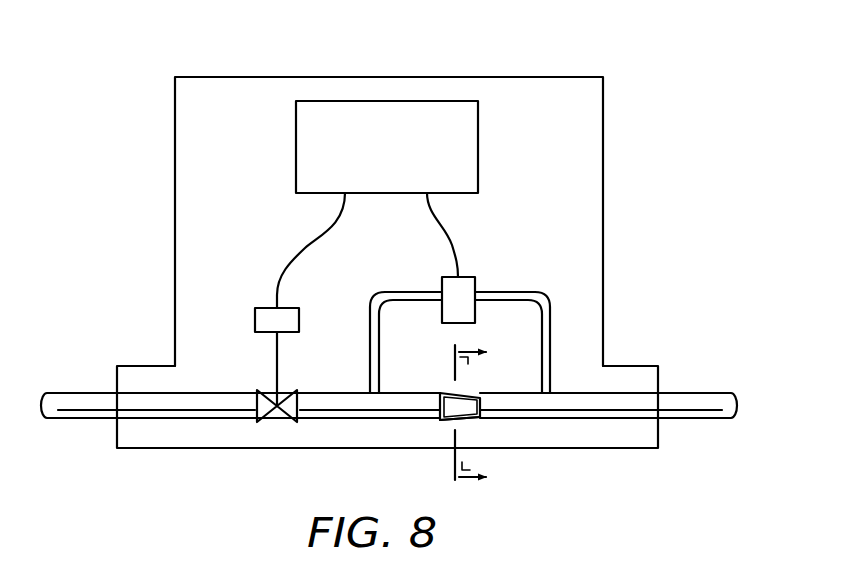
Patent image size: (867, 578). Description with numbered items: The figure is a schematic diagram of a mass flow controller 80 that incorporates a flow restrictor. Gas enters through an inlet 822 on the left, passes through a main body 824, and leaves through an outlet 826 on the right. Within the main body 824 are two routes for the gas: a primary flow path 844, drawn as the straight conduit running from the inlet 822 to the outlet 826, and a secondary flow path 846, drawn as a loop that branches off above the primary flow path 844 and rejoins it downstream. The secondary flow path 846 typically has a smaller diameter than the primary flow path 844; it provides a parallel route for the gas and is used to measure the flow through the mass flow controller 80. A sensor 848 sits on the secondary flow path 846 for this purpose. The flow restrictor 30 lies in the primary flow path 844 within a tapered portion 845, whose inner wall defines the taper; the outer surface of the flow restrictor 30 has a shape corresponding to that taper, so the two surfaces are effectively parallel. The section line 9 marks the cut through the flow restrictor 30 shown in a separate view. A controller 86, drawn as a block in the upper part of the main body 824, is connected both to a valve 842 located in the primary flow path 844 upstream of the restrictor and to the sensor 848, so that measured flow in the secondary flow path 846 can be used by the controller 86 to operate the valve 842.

The mass flow controller 80 is at (401, 254).
The main body 824 is at (610, 180).
The controller 86 is at (401, 157).
The valve 842 is at (268, 347).
The primary flow path 844 is at (347, 418).
The inlet 822 is at (72, 393).
The outlet 826 is at (702, 393).
The secondary flow path 846 is at (504, 291).
The sensor 848 is at (441, 283).
The flow restrictor 30 is at (440, 393).
The tapered portion 845 is at (447, 421).
The section line 9- 9 is at (488, 415).